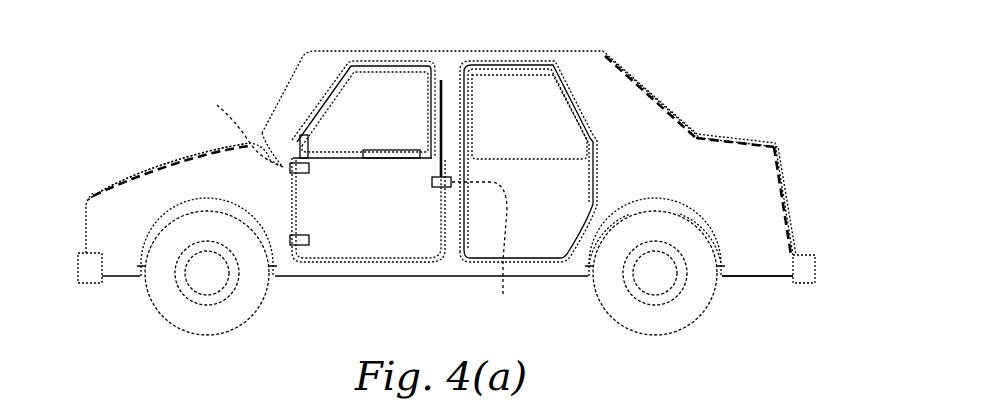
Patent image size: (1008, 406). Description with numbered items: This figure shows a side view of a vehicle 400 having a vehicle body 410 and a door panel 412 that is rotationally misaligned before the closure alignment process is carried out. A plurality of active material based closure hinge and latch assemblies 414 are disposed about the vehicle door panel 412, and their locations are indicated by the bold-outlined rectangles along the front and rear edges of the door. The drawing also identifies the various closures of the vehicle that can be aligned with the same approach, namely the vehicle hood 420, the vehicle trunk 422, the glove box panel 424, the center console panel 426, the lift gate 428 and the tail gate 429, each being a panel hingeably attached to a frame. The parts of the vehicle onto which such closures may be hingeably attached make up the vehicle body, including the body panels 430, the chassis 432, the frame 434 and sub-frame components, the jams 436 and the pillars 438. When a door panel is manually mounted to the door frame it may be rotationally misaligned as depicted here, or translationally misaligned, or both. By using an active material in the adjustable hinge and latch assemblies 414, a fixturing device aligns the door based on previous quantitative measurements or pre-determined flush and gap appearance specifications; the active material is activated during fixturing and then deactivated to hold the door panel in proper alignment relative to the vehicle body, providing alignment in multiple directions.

The vehicle 400 is at (700, 93).
The vehicle body 410 is at (185, 182).
The vehicle passenger door 412 is at (358, 202).
The active material based closure hinge and latch assemblies 414 is at (515, 300).
The vehicle hood 420 is at (175, 160).
The vehicle trunk 422 is at (730, 135).
The glove box panel 424 is at (308, 145).
The center console panel 426 is at (375, 150).
The lift gate 428 is at (637, 80).
The tail gate 429 is at (795, 212).
The body panel 430 is at (748, 247).
The chassis 432 is at (590, 268).
The frame 434 is at (717, 263).
The jam 436 is at (393, 262).
The pillar 438 is at (450, 112).